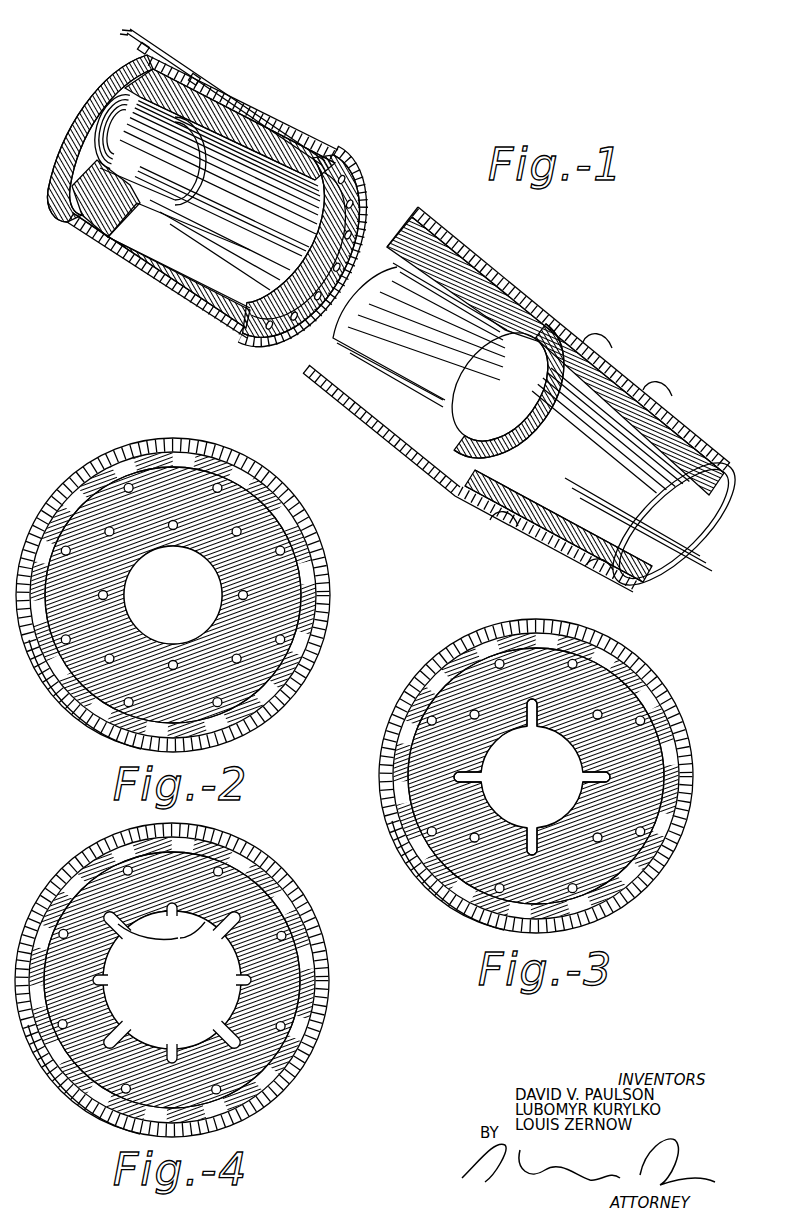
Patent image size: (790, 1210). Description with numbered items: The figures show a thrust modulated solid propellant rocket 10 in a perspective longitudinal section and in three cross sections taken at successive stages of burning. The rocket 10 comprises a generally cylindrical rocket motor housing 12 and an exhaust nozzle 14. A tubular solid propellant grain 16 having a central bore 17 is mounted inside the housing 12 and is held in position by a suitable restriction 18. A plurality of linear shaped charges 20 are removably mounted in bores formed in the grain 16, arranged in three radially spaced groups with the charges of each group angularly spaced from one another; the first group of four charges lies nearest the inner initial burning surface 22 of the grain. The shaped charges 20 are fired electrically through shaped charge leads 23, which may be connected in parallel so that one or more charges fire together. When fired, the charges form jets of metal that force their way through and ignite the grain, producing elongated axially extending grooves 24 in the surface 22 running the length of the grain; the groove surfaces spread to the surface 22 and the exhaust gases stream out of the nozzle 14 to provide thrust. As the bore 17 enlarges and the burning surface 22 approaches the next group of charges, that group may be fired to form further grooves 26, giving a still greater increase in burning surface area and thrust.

In FIG. 1, the thrust modulated solid propellant rocket 10 is at (512, 270).
In FIG. 1, the rocket motor housing 12 is at (277, 108).
In FIG. 2, the rocket motor housing 12 is at (240, 460).
In FIG. 1, the exhaust nozzle 14 is at (600, 336).
In FIG. 1, the tubular solid propellant grain 16 is at (333, 186).
In FIG. 2, the tubular solid propellant grain 16 is at (260, 476).
In FIG. 3, the tubular solid propellant grain 16 is at (660, 708).
In FIG. 4, the tubular solid propellant grain 16 is at (247, 860).
In FIG. 1, the bore 17 is at (393, 325).
In FIG. 2, the bore 17 is at (199, 606).
In FIG. 3, the bore 17 is at (560, 791).
In FIG. 4, the bore 17 is at (196, 978).
In FIG. 1, the restriction 18 is at (541, 405).
In FIG. 1, the shaped charges 20 is at (333, 228).
In FIG. 2, the shaped charges 20 is at (293, 540).
In FIG. 1, the inner initial burning surface 22 is at (398, 288).
In FIG. 2, the inner initial burning surface 22 is at (148, 552).
In FIG. 3, the inner initial burning surface 22 is at (492, 790).
In FIG. 1, the shaped charge leads 23 is at (138, 34).
In FIG. 3, the grooves 24 is at (587, 767).
In FIG. 4, the grooves 24 is at (245, 980).
In FIG. 4, the grooves 26 is at (200, 938).